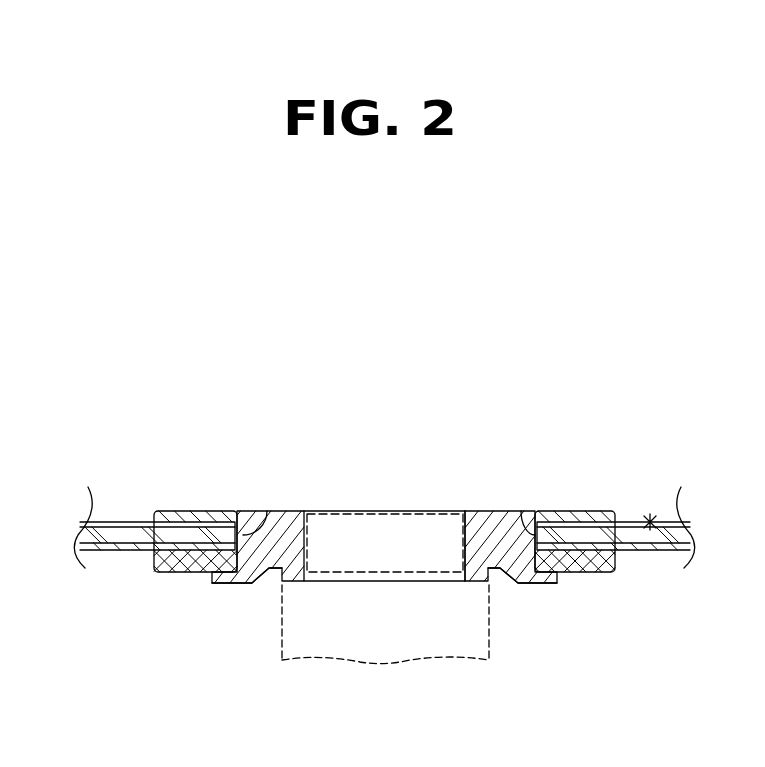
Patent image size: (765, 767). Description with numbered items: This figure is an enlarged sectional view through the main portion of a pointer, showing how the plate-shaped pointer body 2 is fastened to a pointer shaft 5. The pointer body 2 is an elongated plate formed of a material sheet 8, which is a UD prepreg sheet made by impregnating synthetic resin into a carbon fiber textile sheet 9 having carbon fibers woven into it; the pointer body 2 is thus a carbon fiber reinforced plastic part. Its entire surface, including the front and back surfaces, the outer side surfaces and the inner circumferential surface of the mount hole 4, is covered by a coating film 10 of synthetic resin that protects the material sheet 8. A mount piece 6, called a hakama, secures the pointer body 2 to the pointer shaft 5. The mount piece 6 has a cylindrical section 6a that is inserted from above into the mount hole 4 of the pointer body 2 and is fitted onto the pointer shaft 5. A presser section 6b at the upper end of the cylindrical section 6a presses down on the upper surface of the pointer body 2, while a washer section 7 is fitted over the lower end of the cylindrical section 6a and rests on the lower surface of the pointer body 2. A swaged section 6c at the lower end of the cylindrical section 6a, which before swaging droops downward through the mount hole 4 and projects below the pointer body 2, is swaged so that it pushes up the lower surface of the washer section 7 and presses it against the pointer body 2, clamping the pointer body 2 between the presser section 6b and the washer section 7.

The pointer body 2 is at (78, 516).
The mount hole 4 is at (268, 514).
The pointer shaft 5 is at (376, 650).
The mount piece 6 is at (293, 500).
The cylindrical section 6a is at (484, 523).
The presser section 6b is at (163, 511).
The swaged section 6c is at (228, 577).
The washer section 7 is at (190, 562).
The material sheet 8 is at (650, 520).
The carbon fiber textile sheet 9 is at (199, 533).
The coating film 10 is at (126, 553).